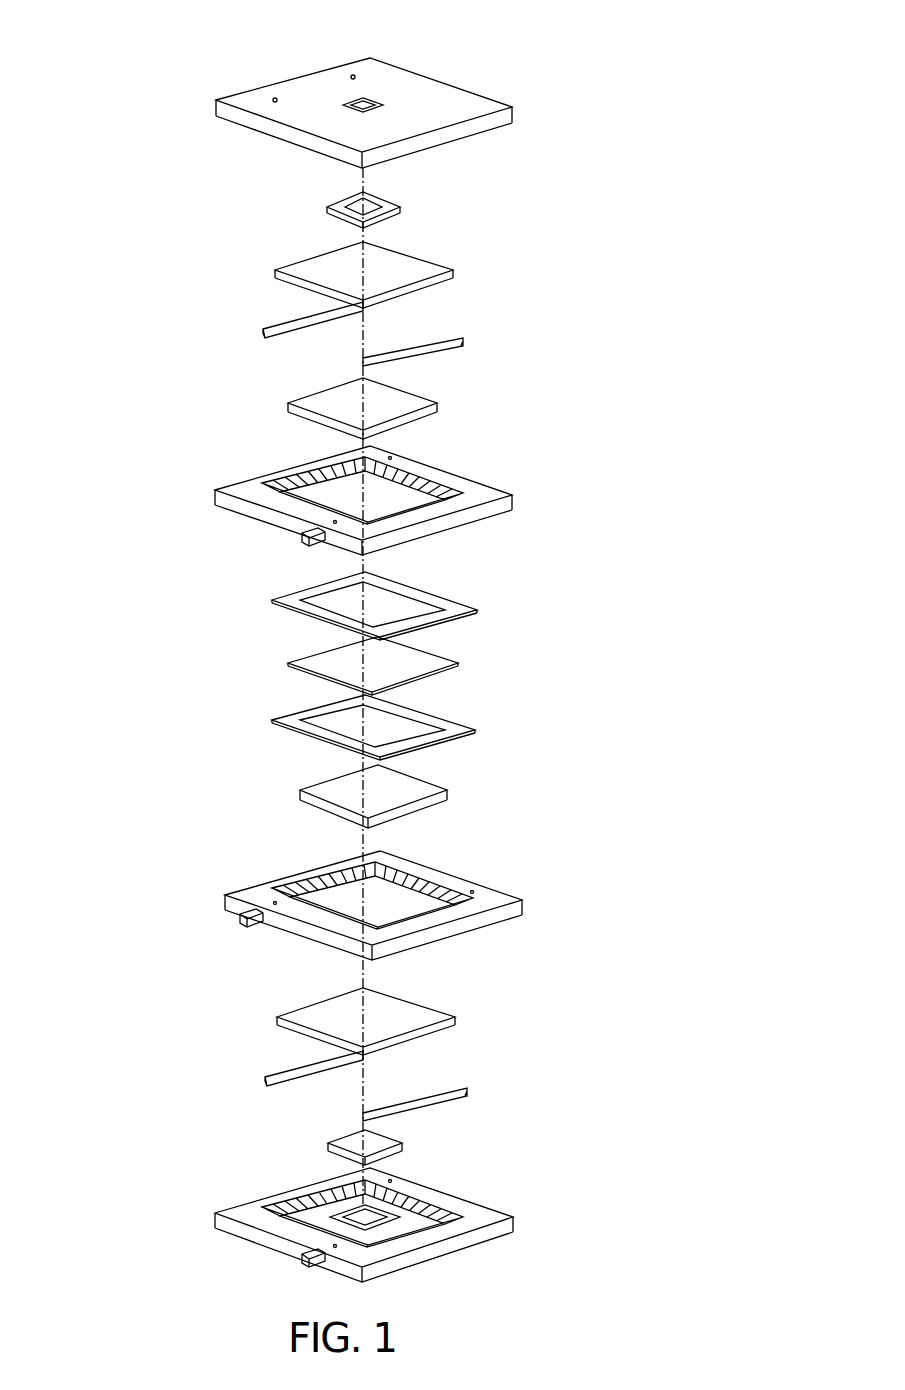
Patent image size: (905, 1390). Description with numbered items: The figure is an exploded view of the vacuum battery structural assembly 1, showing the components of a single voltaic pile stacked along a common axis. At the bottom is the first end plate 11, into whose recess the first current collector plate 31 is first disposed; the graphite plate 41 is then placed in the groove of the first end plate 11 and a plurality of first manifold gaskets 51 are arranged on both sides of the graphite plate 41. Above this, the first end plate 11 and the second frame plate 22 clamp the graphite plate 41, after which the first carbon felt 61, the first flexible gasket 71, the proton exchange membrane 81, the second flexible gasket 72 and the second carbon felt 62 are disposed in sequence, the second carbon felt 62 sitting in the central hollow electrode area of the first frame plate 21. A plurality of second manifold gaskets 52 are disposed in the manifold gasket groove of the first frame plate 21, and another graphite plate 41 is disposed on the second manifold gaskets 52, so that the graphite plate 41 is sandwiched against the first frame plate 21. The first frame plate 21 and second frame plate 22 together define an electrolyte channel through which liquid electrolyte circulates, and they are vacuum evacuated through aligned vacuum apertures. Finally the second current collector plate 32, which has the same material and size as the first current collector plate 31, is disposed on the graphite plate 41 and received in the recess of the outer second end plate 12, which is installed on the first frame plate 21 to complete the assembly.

The vacuum battery structural assembly 1 is at (150, 45).
The first end plate 11 is at (488, 1210).
The second end plate 12 is at (468, 97).
The first frame plate 21 is at (477, 495).
The second frame plate 22 is at (495, 900).
The first current collector plate 31 is at (387, 1140).
The second current collector plate 32 is at (373, 200).
The graphite plate 41 is at (393, 273).
The first manifold gaskets 51 is at (320, 1065).
The second manifold gaskets 52 is at (280, 325).
The first carbon felt 61 is at (398, 787).
The second carbon felt 62 is at (390, 403).
The first flexible gasket 71 is at (400, 730).
The second flexible gasket 72 is at (397, 598).
The proton exchange membrane 81 is at (397, 667).